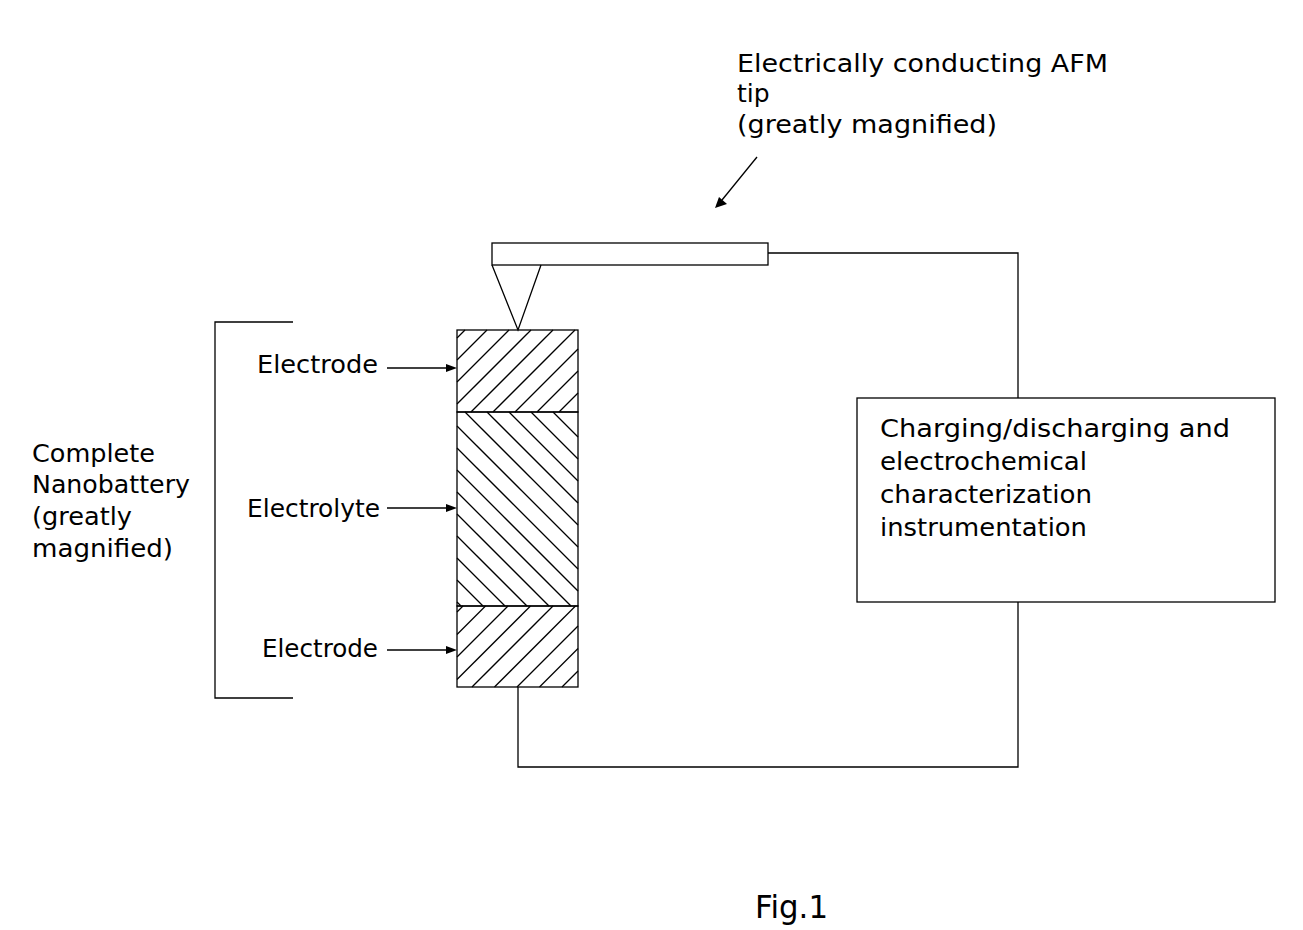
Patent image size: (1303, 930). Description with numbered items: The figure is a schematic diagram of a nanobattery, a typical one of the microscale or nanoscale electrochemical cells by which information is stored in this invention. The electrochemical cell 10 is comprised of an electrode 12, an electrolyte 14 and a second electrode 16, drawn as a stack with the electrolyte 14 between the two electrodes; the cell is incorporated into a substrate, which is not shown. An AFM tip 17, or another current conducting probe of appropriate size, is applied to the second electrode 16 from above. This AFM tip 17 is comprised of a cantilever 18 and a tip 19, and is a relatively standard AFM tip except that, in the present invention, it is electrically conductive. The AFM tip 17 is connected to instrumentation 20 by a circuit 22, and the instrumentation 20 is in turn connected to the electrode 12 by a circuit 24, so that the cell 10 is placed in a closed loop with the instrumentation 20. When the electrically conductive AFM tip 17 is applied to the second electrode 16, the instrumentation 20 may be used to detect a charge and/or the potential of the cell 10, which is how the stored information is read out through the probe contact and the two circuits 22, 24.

The electrochemical cell 10 is at (417, 763).
The electrode 12 is at (580, 652).
The electrolyte 14 is at (580, 497).
The second electrode 16 is at (580, 367).
The AFM tip 17 is at (639, 150).
The cantilever 18 is at (573, 242).
The tip 19 is at (503, 293).
The instrumentation 20 is at (1213, 398).
The circuit 22 is at (957, 253).
The circuit 24 is at (935, 767).